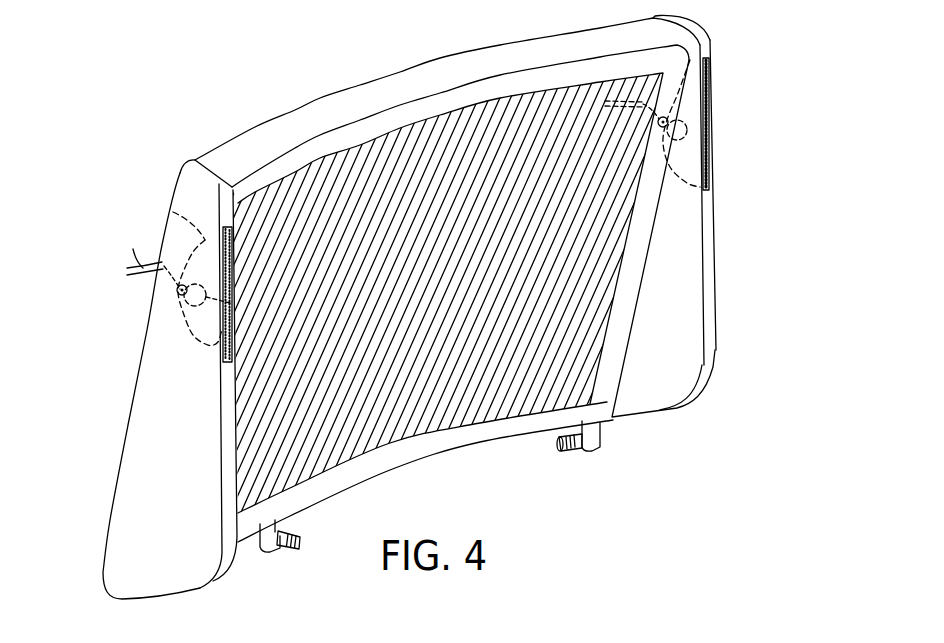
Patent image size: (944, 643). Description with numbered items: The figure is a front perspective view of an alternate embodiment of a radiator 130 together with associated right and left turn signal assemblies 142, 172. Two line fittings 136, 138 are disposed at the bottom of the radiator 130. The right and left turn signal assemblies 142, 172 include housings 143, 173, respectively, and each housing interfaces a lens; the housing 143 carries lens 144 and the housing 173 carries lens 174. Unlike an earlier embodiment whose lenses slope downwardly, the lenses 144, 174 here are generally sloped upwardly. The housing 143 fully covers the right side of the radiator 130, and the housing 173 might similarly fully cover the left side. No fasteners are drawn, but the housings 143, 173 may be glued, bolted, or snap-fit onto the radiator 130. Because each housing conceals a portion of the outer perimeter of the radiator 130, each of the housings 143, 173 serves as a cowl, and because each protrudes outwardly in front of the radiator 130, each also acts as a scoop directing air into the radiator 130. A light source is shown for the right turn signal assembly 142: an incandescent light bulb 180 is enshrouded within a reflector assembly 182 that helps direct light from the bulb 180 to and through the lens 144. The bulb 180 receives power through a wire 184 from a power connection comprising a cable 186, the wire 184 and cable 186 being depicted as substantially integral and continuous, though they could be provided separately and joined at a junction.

The radiator 130 is at (456, 303).
The line fitting 136 is at (281, 549).
The line fitting 138 is at (590, 443).
The right turn signal assembly 142 is at (123, 368).
The housing 143 is at (195, 422).
The lens 144 is at (229, 263).
The left turn signal assembly 172 is at (723, 168).
The housing 173 is at (677, 359).
The lens 174 is at (711, 130).
The incandescent light bulb 180 is at (230, 303).
The reflector assembly 182 is at (173, 212).
The wire 184 is at (155, 290).
The cable 186 is at (384, 195).